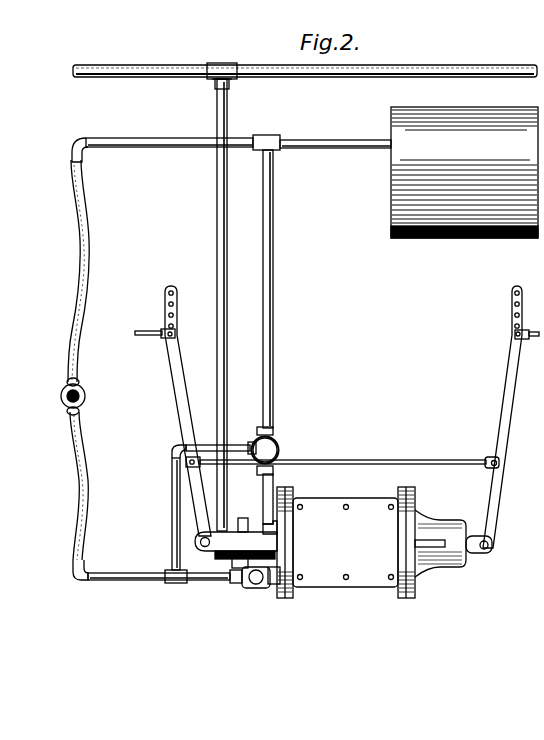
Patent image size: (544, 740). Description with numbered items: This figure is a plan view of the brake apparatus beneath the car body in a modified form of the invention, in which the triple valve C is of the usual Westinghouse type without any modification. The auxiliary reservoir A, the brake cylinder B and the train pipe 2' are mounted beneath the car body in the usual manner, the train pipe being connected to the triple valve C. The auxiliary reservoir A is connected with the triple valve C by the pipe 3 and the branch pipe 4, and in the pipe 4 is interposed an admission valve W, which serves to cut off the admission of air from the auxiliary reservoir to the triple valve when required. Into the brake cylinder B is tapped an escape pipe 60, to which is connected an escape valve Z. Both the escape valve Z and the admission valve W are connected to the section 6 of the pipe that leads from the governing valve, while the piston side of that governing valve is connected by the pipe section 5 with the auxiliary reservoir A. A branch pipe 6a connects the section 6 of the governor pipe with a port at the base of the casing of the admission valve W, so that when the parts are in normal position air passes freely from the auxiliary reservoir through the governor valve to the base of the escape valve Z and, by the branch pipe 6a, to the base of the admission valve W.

The train pipe 2' is at (305, 81).
The pipe 3 is at (335, 155).
The branch pipe 4 is at (272, 256).
The pipe section 5 is at (126, 150).
The pipe section 6 is at (157, 569).
The branch pipe 6a is at (172, 500).
The auxiliary reservoir A is at (464, 172).
The brake cylinder B is at (384, 542).
The admission valve W is at (279, 448).
The triple valve C is at (234, 565).
The escape valve Z is at (251, 590).
The escape pipe 60 is at (275, 586).